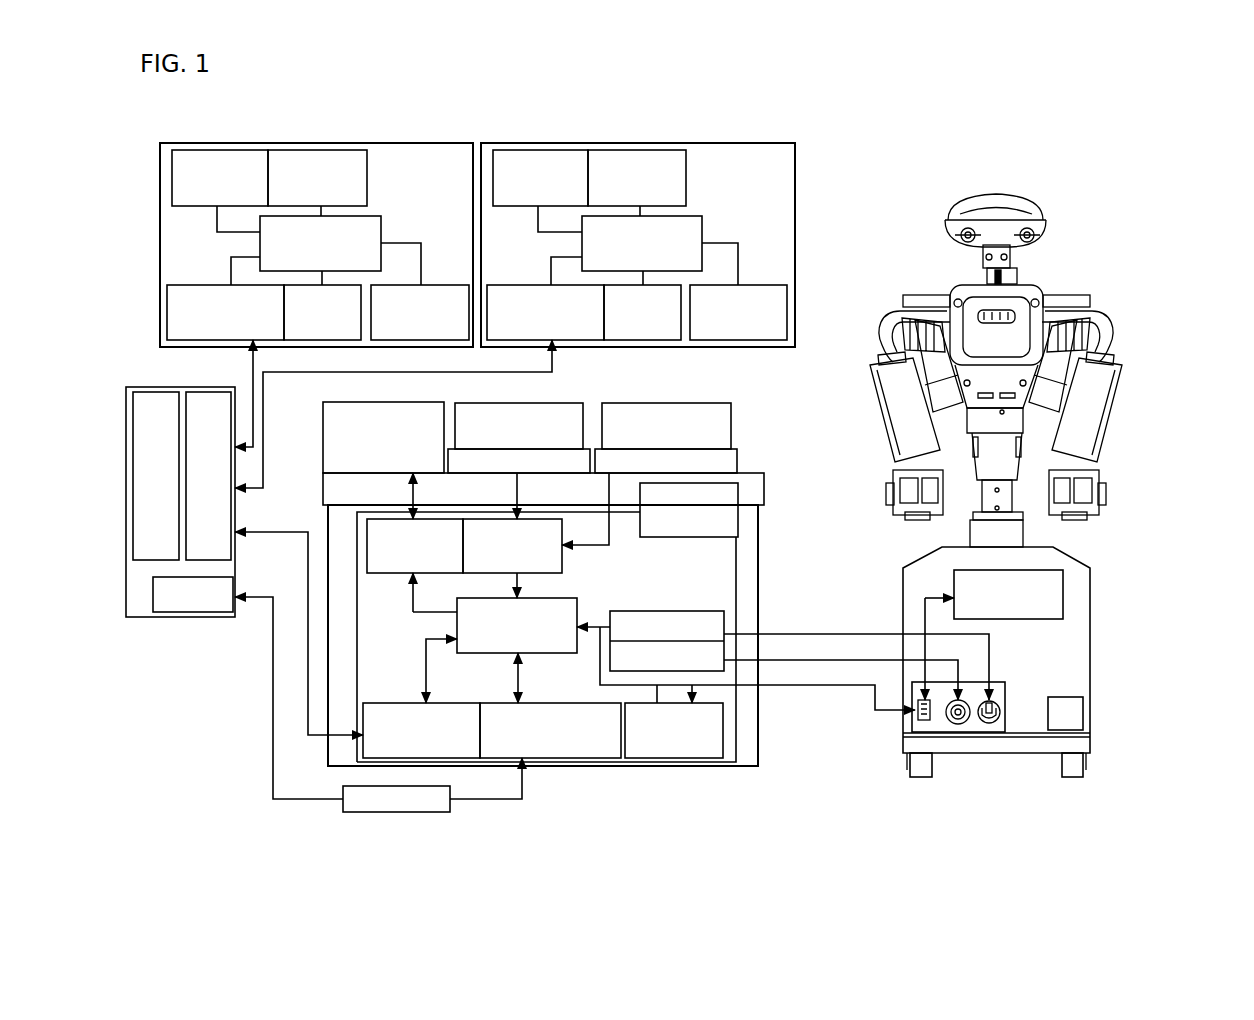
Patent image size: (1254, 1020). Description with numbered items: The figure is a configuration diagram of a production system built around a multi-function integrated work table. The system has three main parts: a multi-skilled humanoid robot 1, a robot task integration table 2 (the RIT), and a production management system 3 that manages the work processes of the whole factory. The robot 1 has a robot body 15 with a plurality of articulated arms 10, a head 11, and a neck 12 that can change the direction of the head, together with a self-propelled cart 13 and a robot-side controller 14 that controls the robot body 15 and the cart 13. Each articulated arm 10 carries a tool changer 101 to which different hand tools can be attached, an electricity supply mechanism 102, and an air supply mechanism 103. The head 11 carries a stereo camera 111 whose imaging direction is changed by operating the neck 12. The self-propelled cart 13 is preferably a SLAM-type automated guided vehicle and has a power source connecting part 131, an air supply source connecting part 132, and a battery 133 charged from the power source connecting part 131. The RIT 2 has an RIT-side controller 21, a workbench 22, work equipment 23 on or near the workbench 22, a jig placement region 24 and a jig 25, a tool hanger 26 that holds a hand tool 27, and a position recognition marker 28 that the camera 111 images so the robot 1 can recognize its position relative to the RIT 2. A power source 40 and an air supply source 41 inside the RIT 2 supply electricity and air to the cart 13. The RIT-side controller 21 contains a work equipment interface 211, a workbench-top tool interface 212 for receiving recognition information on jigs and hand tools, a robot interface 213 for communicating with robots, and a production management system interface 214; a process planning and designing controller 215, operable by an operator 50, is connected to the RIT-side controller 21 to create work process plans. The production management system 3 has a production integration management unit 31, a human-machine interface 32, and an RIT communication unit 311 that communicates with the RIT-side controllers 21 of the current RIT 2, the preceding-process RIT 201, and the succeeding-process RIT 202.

The multi-skilled humanoid robot 1 is at (961, 766).
The robot task integration table 2 is at (768, 731).
The production management system 3 is at (182, 627).
The articulated arm 10 is at (1118, 435).
The head 11 is at (955, 208).
The neck 12 is at (985, 263).
The self-propelled cart 13 is at (1035, 752).
The robot-side controller 14 is at (954, 585).
The robot body 15 is at (975, 475).
The RIT-side controller 21 is at (640, 595).
The workbench 22 is at (747, 470).
The work equipment 23 is at (392, 402).
The jig placement region 24 is at (588, 447).
The jig 25 is at (545, 403).
The tool hanger 26 is at (737, 460).
The hand tool 27 is at (731, 420).
The position recognition marker 28 is at (738, 520).
The production integration management unit 31 is at (146, 392).
The human-machine interface 32 is at (235, 588).
The power source 40 is at (725, 623).
The air supply source 41 is at (724, 650).
The operator 50 is at (378, 704).
The tool changer 101 is at (1072, 515).
The electricity supply mechanism 102 is at (1090, 488).
The air supply mechanism 103 is at (1082, 497).
The stereo camera 111 is at (1027, 228).
The power source connecting part 131 is at (960, 722).
The air supply source connecting part 132 is at (992, 722).
The battery 133 is at (1083, 713).
The preceding-process RIT 201 is at (293, 143).
The succeeding-process RIT 202 is at (617, 143).
The work equipment interface 211 is at (383, 596).
The workbench-top tool interface 212 is at (640, 567).
The robot interface 213 is at (625, 797).
The production management system interface 214 is at (383, 703).
The process planning and designing controller 215 is at (540, 762).
The RIT communication unit 311 is at (235, 508).